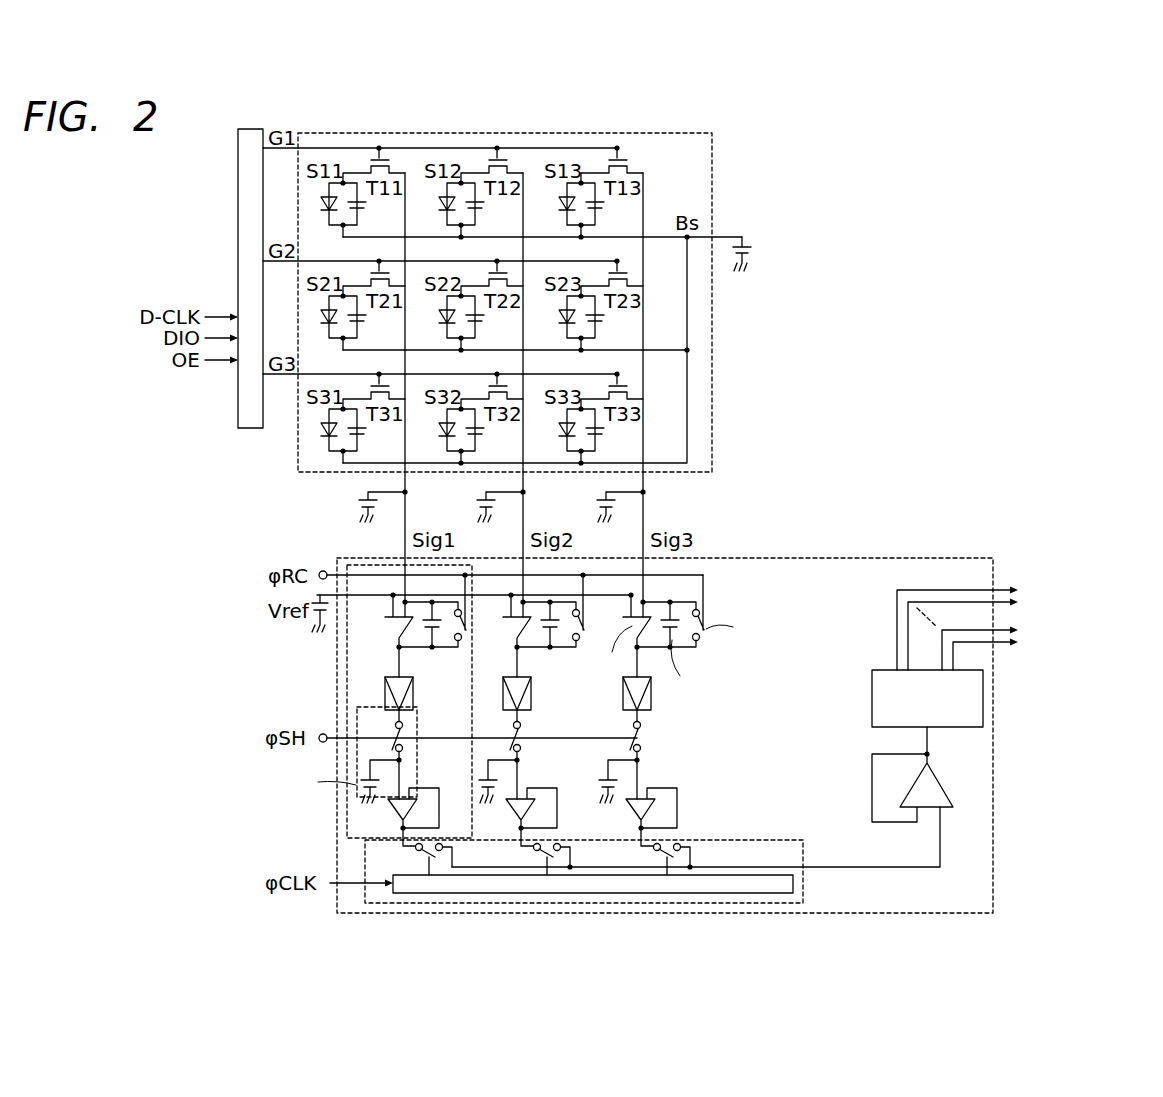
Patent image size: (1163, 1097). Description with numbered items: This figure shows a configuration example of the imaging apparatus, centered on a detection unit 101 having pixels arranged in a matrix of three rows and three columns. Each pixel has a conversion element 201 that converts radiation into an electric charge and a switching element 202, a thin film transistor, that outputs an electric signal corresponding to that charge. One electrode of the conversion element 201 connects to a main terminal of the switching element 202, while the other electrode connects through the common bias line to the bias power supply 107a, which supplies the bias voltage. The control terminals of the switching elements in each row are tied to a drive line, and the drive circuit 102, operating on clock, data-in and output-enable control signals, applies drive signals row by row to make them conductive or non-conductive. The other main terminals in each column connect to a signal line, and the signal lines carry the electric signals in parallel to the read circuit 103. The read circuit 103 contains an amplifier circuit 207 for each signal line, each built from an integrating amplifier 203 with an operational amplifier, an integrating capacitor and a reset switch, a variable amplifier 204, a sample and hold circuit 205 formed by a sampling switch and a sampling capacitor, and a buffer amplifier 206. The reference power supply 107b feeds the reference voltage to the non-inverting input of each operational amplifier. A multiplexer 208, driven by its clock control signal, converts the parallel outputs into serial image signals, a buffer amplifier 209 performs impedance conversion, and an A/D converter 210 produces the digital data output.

The detection unit 101 is at (483, 133).
The drive circuit 102 is at (238, 190).
The read circuit 103 is at (870, 558).
The bias power supply 107a is at (757, 266).
The reference power supply 107b is at (312, 617).
The conversion element 201 is at (585, 180).
The switching element 202 is at (622, 152).
The integrating amplifier 203 is at (698, 572).
The variable amplifier 204 is at (413, 693).
The sample and hold circuit 205 is at (372, 711).
The buffer amplifier 206 is at (397, 812).
The amplifier circuit 207 is at (347, 676).
The multiplexer 208 is at (738, 839).
The buffer amplifier 209 is at (933, 786).
The A/D converter 210 is at (872, 698).